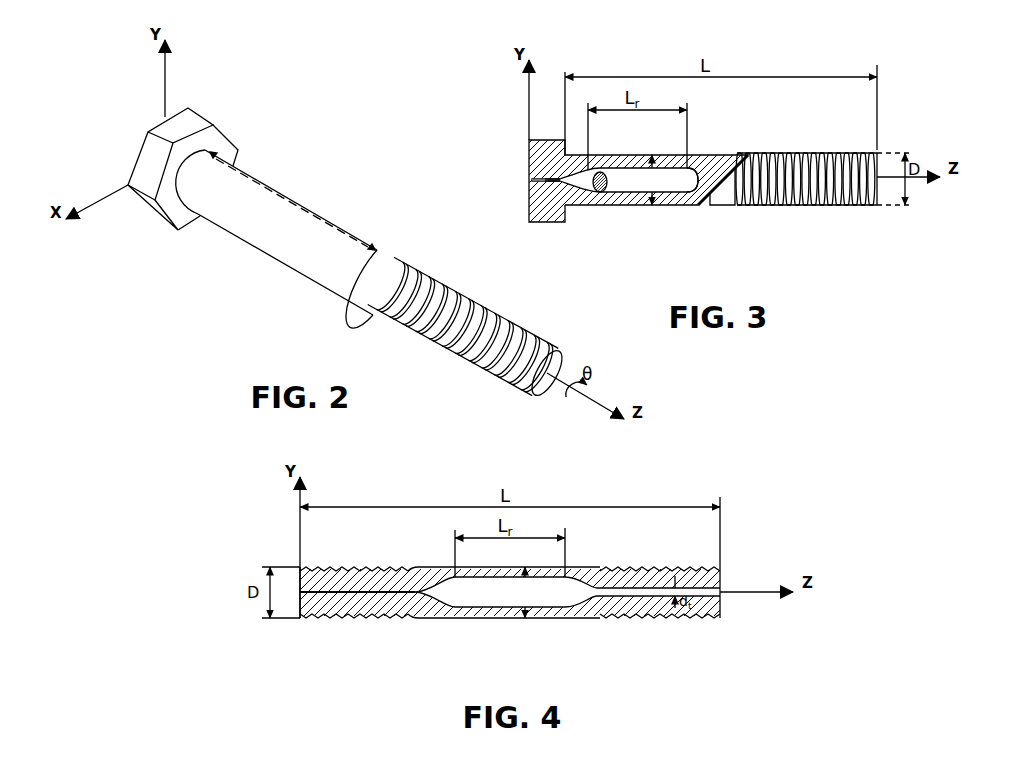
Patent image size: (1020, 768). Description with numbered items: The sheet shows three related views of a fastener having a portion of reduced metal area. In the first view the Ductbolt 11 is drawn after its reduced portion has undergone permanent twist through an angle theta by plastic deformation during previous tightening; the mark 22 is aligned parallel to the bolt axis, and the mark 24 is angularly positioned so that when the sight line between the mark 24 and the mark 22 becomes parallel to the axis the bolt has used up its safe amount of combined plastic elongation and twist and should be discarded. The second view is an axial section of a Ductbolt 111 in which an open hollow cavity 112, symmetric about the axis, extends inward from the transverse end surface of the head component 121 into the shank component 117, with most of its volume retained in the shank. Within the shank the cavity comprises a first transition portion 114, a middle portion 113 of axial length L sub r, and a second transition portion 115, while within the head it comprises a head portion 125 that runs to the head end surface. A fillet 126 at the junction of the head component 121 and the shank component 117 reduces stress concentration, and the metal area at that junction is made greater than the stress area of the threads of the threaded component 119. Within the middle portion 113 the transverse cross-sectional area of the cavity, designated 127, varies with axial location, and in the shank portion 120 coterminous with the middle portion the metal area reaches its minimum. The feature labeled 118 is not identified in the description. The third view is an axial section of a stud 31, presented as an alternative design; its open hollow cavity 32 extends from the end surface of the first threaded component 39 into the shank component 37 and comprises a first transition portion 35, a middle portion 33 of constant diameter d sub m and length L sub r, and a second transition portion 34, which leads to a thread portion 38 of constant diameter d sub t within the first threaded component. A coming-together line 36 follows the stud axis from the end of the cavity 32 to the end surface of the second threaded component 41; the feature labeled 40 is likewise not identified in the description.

In FIG. 2, the Ductbolt 11 is at (533, 388).
In FIG. 2, the mark 22 is at (214, 151).
In FIG. 2, the mark 24 is at (375, 248).
In FIG. 3, the Ductbolt 111 is at (880, 193).
In FIG. 3, the open hollow cavity 112 is at (545, 181).
In FIG. 3, the middle portion 113 is at (635, 175).
In FIG. 3, the first transition portion 114 is at (692, 188).
In FIG. 3, the second transition portion 115 is at (575, 184).
In FIG. 3, the shank component 117 is at (701, 208).
In FIG. 3, the transition bevel 118 is at (720, 206).
In FIG. 3, the threaded component 119 is at (813, 204).
In FIG. 3, the shank portion 120 is at (627, 203).
In FIG. 3, the head component 121 is at (529, 155).
In FIG. 3, the head portion 125 is at (558, 184).
In FIG. 3, the fillet 126 is at (565, 140).
In FIG. 3, the axially transverse cross sectional area of the cavity 127 is at (601, 193).
In FIG. 4, the stud 31 is at (721, 601).
In FIG. 4, the open hollow cavity 32 is at (508, 603).
In FIG. 4, the middle portion 33 is at (505, 586).
In FIG. 4, the second transition portion 34 is at (578, 595).
In FIG. 4, the first transition portion 35 is at (447, 602).
In FIG. 4, the coming-together line 36 is at (377, 594).
In FIG. 4, the shank component 37 is at (568, 574).
In FIG. 4, the thread portion 38 is at (653, 594).
In FIG. 4, the first threaded component 39 is at (652, 567).
In FIG. 4, the bottom wall 40 is at (542, 615).
In FIG. 4, the second threaded component 41 is at (377, 566).